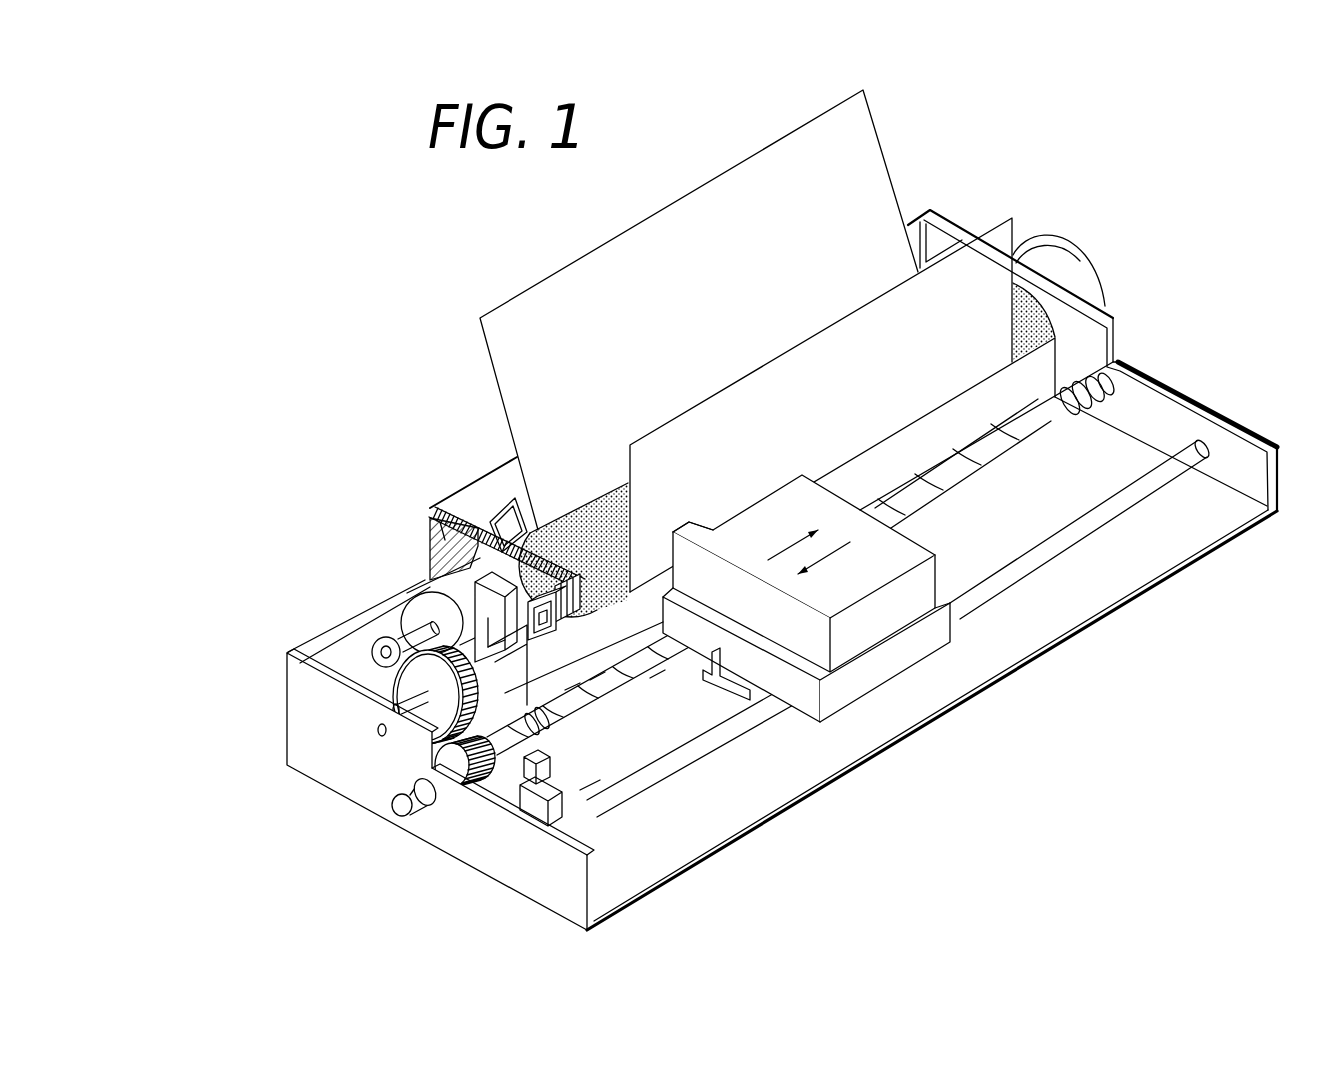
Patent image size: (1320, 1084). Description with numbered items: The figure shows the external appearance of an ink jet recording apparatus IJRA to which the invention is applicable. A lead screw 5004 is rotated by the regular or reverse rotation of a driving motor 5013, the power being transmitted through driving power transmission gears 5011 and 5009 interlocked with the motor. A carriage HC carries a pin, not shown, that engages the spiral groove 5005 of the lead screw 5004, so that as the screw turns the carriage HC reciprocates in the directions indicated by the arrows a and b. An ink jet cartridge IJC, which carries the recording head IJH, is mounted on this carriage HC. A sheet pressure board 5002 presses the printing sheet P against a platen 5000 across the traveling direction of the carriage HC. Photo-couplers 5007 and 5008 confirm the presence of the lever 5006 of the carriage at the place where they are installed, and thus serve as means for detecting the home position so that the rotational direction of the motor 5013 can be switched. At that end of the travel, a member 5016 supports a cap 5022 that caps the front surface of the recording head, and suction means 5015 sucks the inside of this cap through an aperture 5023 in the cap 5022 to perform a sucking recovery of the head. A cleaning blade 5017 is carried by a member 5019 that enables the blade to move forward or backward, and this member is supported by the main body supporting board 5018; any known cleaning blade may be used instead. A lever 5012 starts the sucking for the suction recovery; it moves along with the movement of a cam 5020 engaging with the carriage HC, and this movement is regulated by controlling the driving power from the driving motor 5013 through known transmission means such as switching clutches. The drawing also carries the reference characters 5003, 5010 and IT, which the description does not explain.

The platen 5000 is at (1040, 312).
The sheet pressure board 5002 is at (947, 417).
The support member 5003 is at (580, 790).
The lead screw 5004 is at (705, 665).
The spiral groove 5005 is at (762, 665).
The lever 5006 is at (792, 700).
The photo-coupler 5007 is at (530, 735).
The photo-coupler 5008 is at (540, 770).
The driving power transmission gear 5009 is at (455, 758).
The cap member 5010 is at (410, 712).
The driving power transmission gear 5011 is at (408, 684).
The lever 5012 is at (590, 680).
The driving motor 5013 is at (442, 590).
The suction means 5015 is at (492, 518).
The cap supporting member 5016 is at (530, 545).
The cleaning blade 5017 is at (575, 560).
The main body supporting board 5018 is at (445, 505).
The blade moving member 5019 is at (440, 522).
The cam 5020 is at (565, 690).
The cap 5022 is at (547, 620).
The aperture 5023 is at (650, 678).
The printing sheet P is at (866, 133).
The ink jet recording apparatus IJRA is at (968, 200).
The ink jet cartridge IJC is at (933, 543).
The recording head IJH is at (689, 522).
The ink tank IT is at (835, 503).
The carriage HC is at (949, 627).